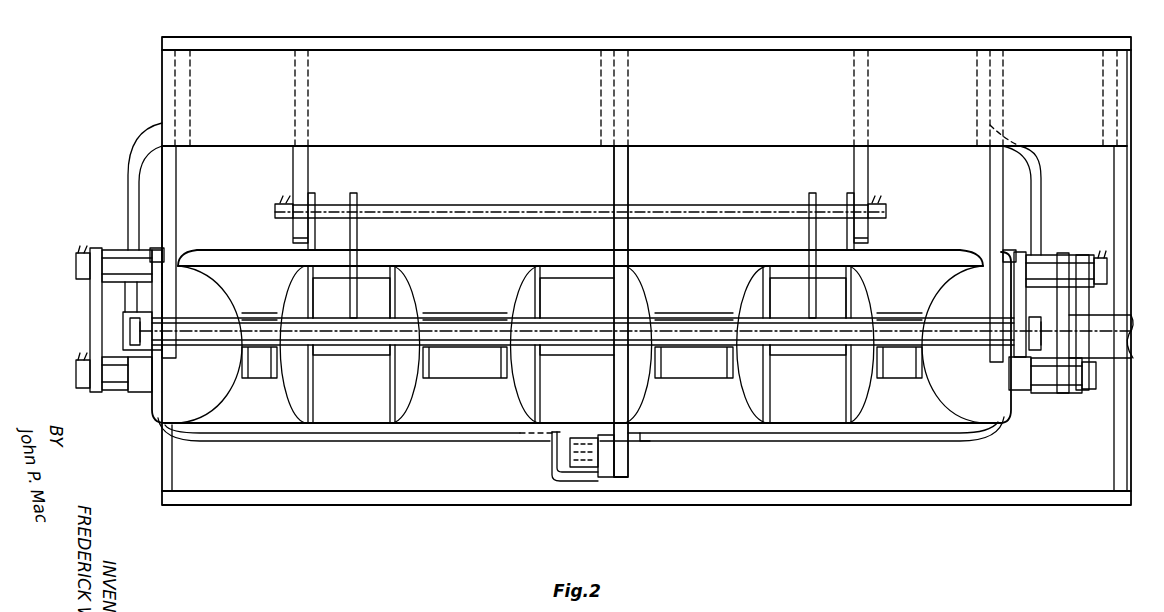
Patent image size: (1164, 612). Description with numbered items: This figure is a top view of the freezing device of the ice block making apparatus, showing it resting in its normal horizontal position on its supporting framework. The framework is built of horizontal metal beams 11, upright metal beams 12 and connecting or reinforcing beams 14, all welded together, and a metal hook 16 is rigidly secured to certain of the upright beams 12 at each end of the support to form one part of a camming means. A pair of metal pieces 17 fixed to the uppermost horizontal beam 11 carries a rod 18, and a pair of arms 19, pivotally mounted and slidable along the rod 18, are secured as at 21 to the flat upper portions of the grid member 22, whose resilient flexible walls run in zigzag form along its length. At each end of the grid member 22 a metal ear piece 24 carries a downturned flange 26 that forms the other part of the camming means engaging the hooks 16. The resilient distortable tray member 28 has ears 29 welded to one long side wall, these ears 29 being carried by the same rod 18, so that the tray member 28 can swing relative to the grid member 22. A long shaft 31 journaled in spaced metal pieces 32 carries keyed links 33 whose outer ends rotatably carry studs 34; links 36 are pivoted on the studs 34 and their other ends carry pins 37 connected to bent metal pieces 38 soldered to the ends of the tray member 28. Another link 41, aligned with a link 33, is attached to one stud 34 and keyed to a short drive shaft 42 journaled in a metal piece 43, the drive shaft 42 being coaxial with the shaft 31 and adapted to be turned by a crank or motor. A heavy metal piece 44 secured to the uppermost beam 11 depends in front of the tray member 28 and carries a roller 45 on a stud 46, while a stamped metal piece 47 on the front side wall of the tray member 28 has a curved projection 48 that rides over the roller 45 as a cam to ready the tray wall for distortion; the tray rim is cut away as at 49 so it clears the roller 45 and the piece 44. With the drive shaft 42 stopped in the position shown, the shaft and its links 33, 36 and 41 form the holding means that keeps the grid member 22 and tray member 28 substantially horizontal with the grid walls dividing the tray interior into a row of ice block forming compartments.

The horizontal metal beams 11 is at (506, 55).
The upright metal beams 12 is at (188, 75).
The connecting or reinforcing beams 14 is at (577, 46).
The hook 16 is at (128, 167).
The metal pieces 17 is at (293, 161).
The rod 18 is at (474, 210).
The arms 19 is at (368, 239).
The securing point of arms to grid 21 is at (339, 296).
The grid member 22 is at (481, 380).
The ear piece 24 is at (124, 327).
The flange 26 is at (123, 338).
The tray member 28 is at (352, 437).
The ears 29 is at (316, 196).
The shaft 31 is at (590, 338).
The metal pieces 32 is at (178, 208).
The links 33 is at (148, 291).
The stud 34 is at (163, 258).
The links 36 is at (94, 292).
The pin 37 is at (78, 371).
The bent metal piece 38 is at (140, 393).
The link 41 is at (1082, 300).
The drive shaft 42 is at (1135, 318).
The metal piece 43 is at (1120, 200).
The heavy metal piece 44 is at (606, 480).
The roller 45 is at (592, 470).
The stud 46 is at (570, 461).
The stamped piece of metal 47 is at (550, 447).
The curved projection 48 is at (565, 481).
The cut away portion of tray rim 49 is at (640, 441).